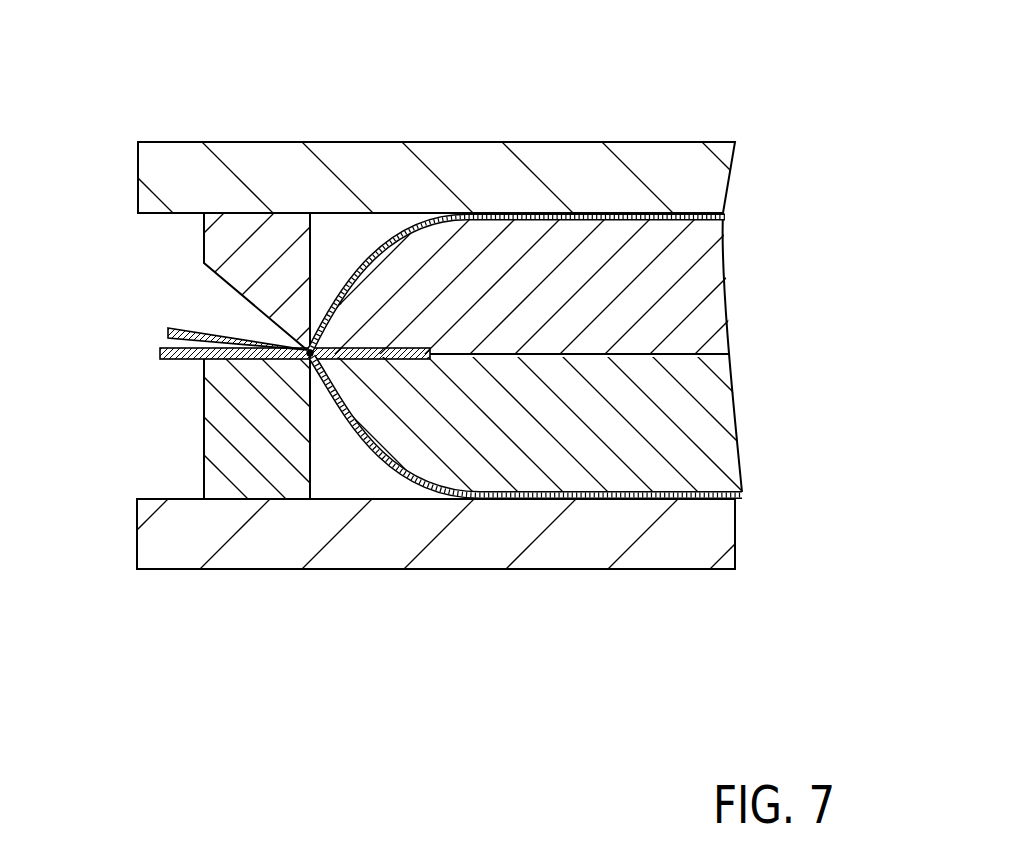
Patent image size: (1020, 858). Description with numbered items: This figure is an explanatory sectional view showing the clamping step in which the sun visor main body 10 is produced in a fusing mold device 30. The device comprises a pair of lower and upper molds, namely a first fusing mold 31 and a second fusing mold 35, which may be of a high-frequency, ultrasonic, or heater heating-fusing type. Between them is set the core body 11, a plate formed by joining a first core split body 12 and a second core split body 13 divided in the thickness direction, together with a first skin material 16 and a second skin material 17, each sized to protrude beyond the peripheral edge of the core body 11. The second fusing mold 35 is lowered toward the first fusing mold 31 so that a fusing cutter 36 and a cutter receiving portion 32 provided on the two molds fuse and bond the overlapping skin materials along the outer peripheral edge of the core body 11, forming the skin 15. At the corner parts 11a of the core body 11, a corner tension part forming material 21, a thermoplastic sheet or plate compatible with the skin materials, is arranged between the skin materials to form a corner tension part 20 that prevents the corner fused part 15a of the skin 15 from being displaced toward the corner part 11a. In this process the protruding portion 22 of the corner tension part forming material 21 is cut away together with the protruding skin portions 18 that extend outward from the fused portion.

The sun visor main body 10 is at (568, 372).
The core body 11 is at (586, 460).
The corner part 11a is at (340, 303).
The first core split body 12 is at (582, 442).
The second core split body 13 is at (697, 330).
The skin 15 is at (526, 259).
The corner fused part 15a is at (316, 360).
The first skin material 16 is at (620, 492).
The second skin material 17 is at (530, 214).
The protruding skin portion 18 is at (188, 341).
The corner tension part 20 is at (370, 447).
The corner tension part forming material 21 is at (313, 365).
The protruding portion 22 is at (217, 328).
The fusing mold device 30 is at (176, 125).
The first fusing mold 31 is at (492, 540).
The cutter receiving portion 32 is at (220, 414).
The second fusing mold 35 is at (322, 172).
The fusing cutter 36 is at (270, 283).